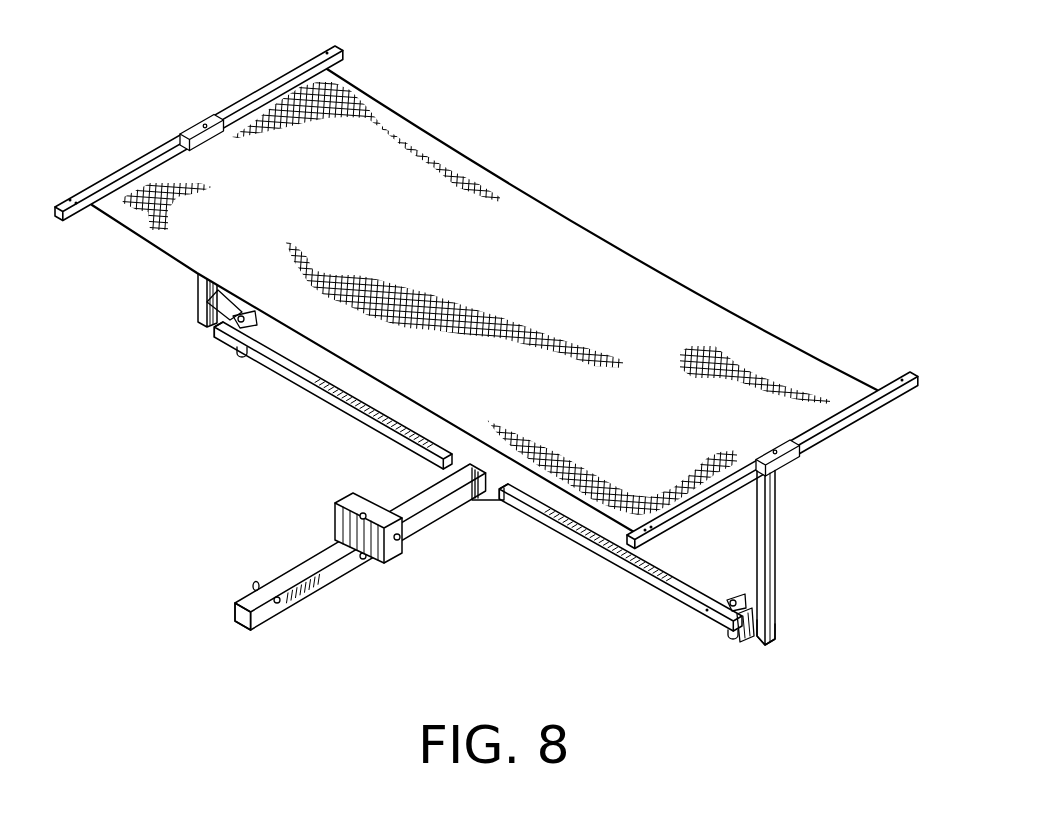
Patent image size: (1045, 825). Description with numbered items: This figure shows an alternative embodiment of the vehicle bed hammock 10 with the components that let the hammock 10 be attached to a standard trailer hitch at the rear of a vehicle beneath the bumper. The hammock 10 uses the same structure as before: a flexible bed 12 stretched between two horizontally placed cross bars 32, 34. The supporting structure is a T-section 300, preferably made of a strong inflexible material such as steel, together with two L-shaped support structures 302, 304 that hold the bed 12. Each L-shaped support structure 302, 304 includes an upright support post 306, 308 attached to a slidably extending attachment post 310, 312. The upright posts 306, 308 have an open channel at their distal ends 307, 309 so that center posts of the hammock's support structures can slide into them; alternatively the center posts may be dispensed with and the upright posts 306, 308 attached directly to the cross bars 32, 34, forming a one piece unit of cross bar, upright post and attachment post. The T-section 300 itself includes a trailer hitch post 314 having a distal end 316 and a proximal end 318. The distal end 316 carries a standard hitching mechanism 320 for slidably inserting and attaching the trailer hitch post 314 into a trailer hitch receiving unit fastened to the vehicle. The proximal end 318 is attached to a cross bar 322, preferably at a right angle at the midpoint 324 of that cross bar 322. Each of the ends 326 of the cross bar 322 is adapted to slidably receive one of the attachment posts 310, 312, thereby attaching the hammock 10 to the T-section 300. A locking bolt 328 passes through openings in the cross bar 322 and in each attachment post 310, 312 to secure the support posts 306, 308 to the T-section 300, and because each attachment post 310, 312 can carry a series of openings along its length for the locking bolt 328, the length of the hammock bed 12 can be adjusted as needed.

The hammock 10 is at (490, 361).
The bed 12 is at (763, 356).
The cross bar 32 is at (858, 422).
The cross bar 34 is at (258, 88).
The T-section 300 is at (490, 492).
The L-shaped support structure 302 is at (770, 642).
The L-shaped support structure 304 is at (164, 305).
The upright support post 306 is at (772, 585).
The distal end 307 is at (773, 474).
The upright support post 308 is at (198, 290).
The distal end 309 is at (175, 130).
The attachment post 310 is at (747, 636).
The attachment post 312 is at (210, 326).
The trailer hitch post 314 is at (350, 565).
The distal end 316 is at (257, 624).
The proximal end 318 is at (450, 472).
The hitching mechanism 320 is at (335, 535).
The cross bar 322 is at (618, 547).
The midpoint 324 is at (478, 473).
The ends 326 is at (231, 336).
The locking bolt 328 is at (242, 356).